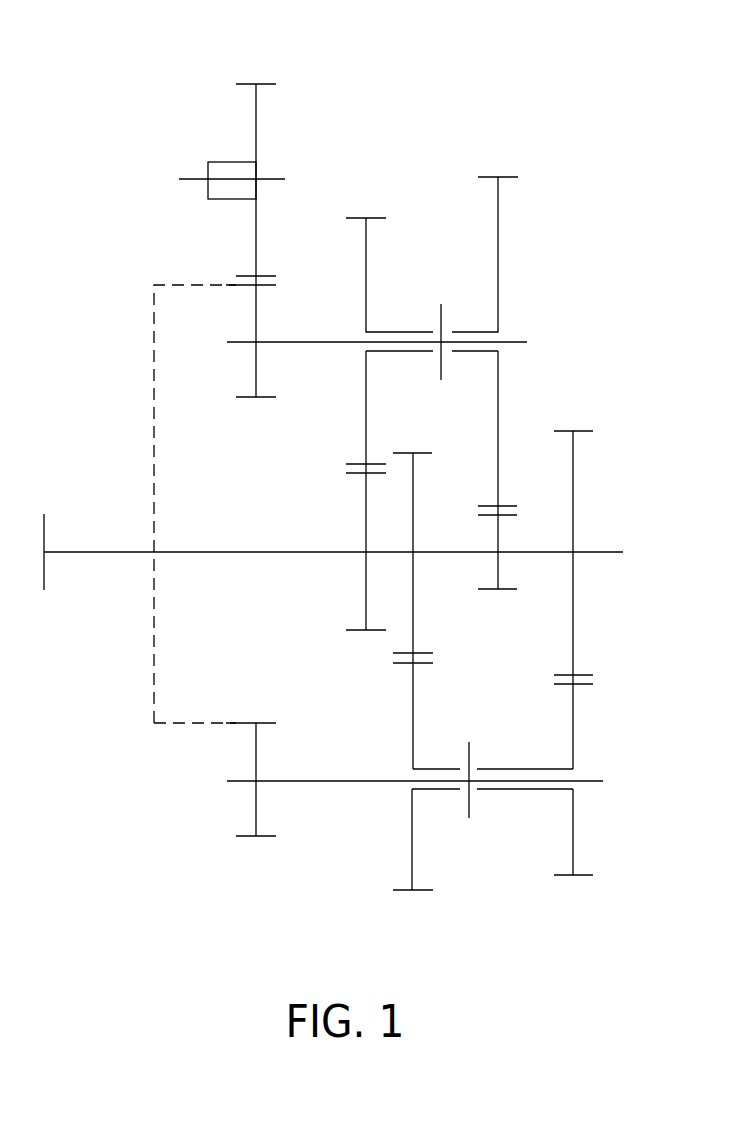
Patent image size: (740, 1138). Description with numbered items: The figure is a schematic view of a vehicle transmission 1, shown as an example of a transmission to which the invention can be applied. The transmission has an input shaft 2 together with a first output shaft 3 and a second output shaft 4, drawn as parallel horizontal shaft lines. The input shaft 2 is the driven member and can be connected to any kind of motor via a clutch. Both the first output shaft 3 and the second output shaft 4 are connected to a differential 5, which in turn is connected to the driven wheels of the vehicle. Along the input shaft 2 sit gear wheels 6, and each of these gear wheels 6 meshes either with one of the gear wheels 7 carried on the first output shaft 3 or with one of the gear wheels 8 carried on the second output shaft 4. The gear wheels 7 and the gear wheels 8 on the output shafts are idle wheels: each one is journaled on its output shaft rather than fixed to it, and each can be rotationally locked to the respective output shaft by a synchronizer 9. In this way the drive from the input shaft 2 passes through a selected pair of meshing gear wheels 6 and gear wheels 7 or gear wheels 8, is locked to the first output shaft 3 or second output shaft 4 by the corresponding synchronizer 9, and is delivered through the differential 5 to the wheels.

The vehicle transmission 1 is at (528, 102).
The input shaft 2 is at (105, 551).
The first output shaft 3 is at (323, 343).
The second output shaft 4 is at (348, 782).
The differential 5 is at (256, 125).
The gear wheels 6 is at (366, 588).
The gear wheels 7 is at (366, 275).
The gear wheels 8 is at (412, 843).
The synchronizer 9 is at (436, 317).